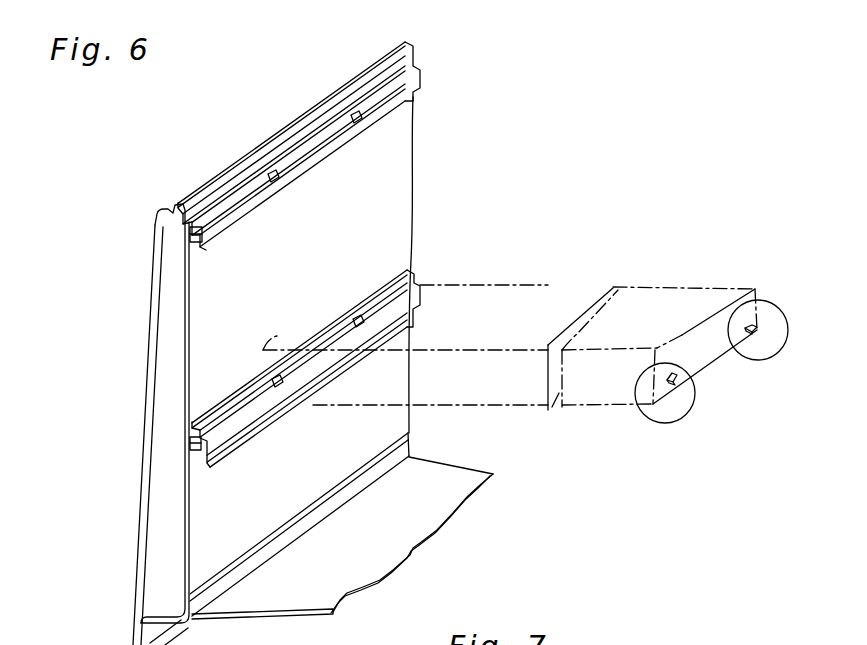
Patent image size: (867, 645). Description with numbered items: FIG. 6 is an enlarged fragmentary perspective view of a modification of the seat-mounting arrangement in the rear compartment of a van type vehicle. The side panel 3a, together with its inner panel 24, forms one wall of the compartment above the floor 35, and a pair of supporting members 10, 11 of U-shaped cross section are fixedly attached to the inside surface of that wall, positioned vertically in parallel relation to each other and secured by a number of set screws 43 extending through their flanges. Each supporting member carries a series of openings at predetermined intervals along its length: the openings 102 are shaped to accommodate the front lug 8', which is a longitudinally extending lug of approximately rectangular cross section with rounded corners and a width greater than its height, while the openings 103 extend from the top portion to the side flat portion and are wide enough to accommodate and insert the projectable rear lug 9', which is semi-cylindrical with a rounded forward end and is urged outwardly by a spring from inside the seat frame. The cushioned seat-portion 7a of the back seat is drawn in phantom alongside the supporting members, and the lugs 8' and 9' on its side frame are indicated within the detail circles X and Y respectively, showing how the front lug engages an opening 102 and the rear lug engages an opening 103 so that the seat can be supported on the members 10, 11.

The side panel 3a is at (207, 327).
The inner panel 24 is at (398, 163).
The supporting member 10 is at (224, 216).
The supporting member 11 is at (229, 424).
The set screw 43 is at (192, 222).
The opening 102 is at (275, 184).
The opening 103 is at (358, 318).
The floor 35 is at (440, 474).
The cushioned seat-portion 7a is at (495, 312).
The detail circle X is at (662, 423).
The detail circle Y is at (762, 360).
The front lug 8' is at (700, 413).
The rear lug 9' is at (771, 279).